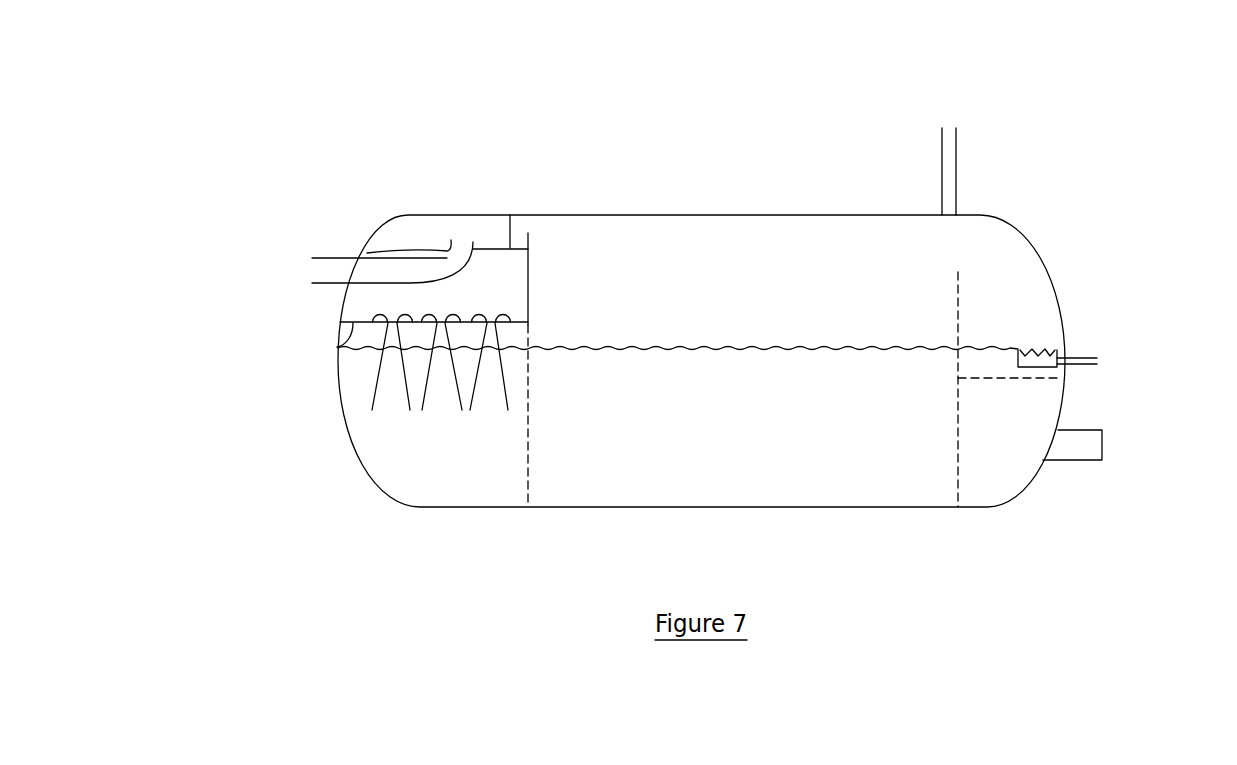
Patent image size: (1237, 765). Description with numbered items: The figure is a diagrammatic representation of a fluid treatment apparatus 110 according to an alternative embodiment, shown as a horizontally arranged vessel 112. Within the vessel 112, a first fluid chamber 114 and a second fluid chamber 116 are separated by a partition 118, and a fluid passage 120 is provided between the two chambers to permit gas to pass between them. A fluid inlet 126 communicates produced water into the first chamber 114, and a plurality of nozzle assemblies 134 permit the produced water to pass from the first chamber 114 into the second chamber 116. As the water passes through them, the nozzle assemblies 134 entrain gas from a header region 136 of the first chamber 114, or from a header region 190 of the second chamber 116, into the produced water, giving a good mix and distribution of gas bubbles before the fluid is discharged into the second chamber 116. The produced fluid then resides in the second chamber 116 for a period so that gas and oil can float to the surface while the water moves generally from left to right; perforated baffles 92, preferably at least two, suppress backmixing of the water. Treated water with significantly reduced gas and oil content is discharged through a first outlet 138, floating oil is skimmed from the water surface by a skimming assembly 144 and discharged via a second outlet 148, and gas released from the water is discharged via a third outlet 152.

The fluid treatment apparatus 110 is at (312, 142).
The vessel 112 is at (743, 215).
The first fluid chamber 114 is at (363, 298).
The second fluid chamber 116 is at (1017, 290).
The partition 118 is at (530, 281).
The fluid passage 120 is at (518, 235).
The fluid inlet 126 is at (325, 271).
The nozzle assemblies 134 is at (378, 342).
The header region of the first chamber 136 is at (407, 227).
The first outlet 138 is at (1096, 450).
The skimming assembly 144 is at (1043, 352).
The second outlet 148 is at (1097, 361).
The third outlet 152 is at (948, 157).
The header region of the second chamber 190 is at (848, 248).
The perforated baffles 92 is at (532, 458).